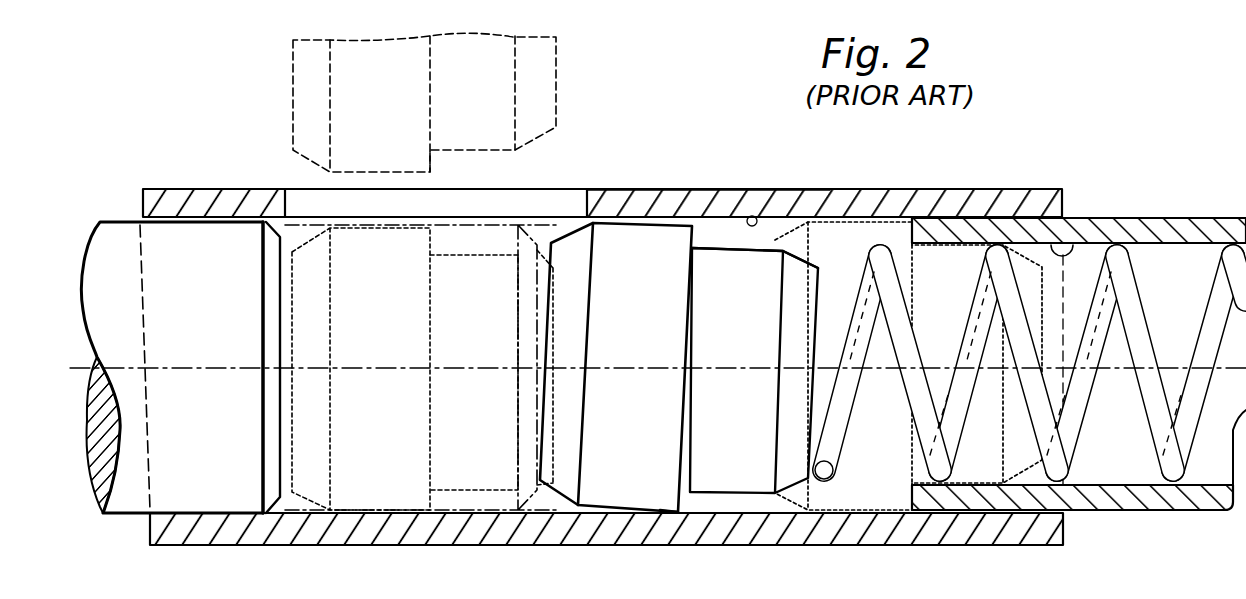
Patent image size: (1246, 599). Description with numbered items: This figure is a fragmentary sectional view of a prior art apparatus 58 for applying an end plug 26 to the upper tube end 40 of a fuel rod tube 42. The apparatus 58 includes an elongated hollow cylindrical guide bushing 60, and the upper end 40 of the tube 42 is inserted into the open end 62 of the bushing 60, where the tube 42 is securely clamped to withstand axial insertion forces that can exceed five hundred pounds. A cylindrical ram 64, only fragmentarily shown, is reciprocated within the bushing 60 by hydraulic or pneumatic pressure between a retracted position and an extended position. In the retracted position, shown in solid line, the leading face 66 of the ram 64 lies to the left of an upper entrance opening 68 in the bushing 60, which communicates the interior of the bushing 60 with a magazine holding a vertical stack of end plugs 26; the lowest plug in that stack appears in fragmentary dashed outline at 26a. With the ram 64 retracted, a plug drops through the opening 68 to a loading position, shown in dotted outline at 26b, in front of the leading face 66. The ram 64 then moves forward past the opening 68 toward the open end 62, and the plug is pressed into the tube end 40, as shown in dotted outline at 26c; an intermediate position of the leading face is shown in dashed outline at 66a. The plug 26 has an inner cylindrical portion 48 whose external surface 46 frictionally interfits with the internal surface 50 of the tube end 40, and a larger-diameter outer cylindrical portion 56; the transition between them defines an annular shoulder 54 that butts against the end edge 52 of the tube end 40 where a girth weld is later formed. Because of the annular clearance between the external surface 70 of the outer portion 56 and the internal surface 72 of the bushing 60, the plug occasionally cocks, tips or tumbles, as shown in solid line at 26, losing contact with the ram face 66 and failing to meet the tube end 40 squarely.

The end plug 26 is at (627, 377).
The end plug in magazine 26a is at (554, 64).
The end plug at loading position 26b is at (487, 487).
The end plug applied to tube end 26c is at (793, 500).
The upper tube end 40 is at (603, 350).
The fuel rod tube 42 is at (1079, 367).
The external surface of inner cylindrical portion 46 is at (750, 250).
The inner cylindrical portion 48 is at (754, 400).
The internal surface of tube upper end 50 is at (1081, 232).
The end edge of tube 52 is at (912, 493).
The annular shoulder 54 is at (679, 498).
The outer cylindrical portion 56 is at (640, 225).
The prior art end plug applying apparatus 58 is at (603, 335).
The guide bushing 60 is at (816, 193).
The open end of bushing 62 is at (1097, 490).
The ram 64 is at (200, 503).
The leading face of ram 66 is at (286, 503).
The leading face at intermediate position 66a is at (547, 547).
The upper entrance opening 68 is at (586, 196).
The external surface of outer portion 70 is at (676, 217).
The internal surface of guide bushing 72 is at (750, 216).